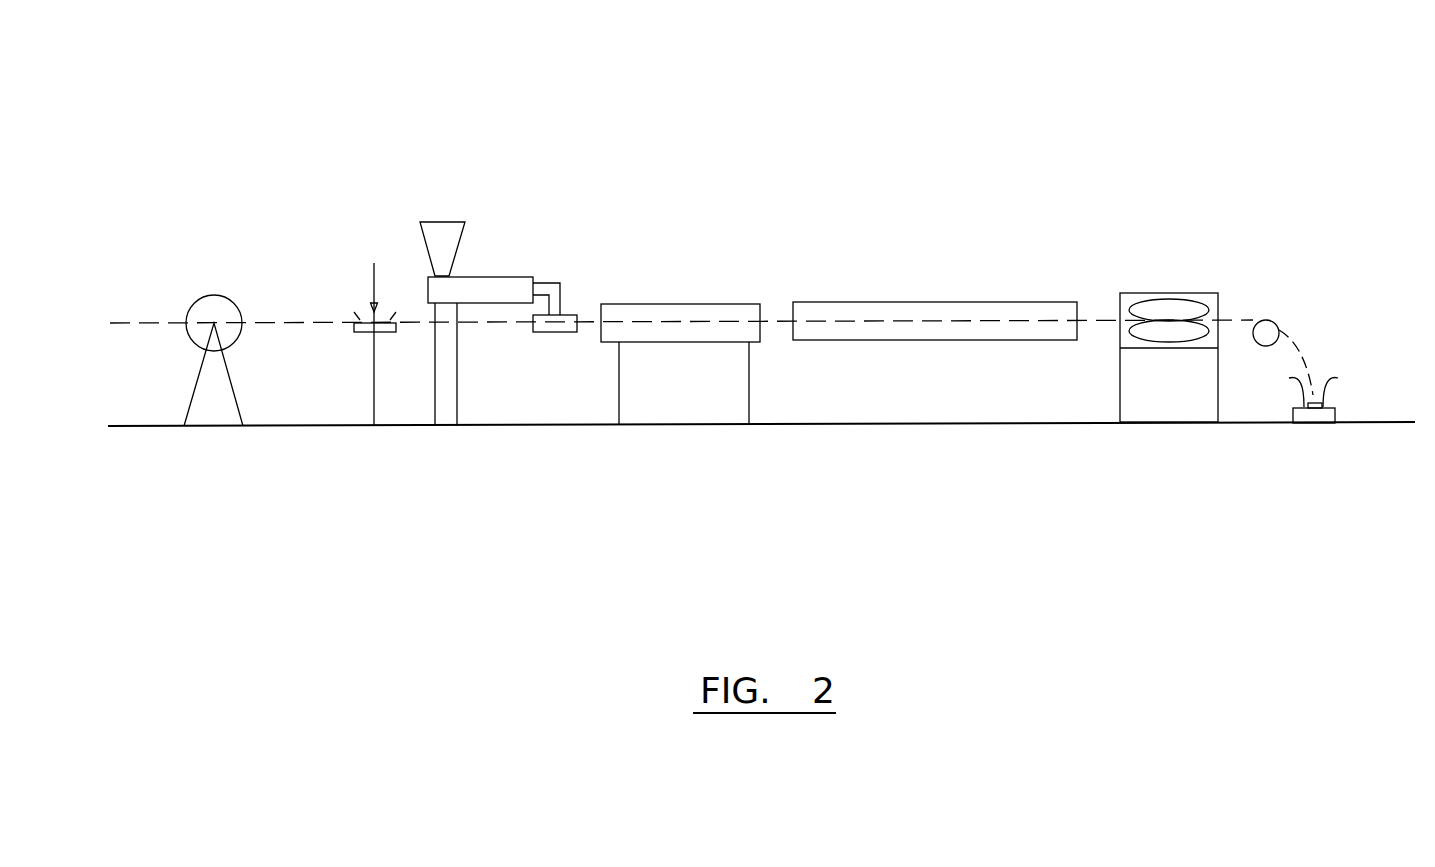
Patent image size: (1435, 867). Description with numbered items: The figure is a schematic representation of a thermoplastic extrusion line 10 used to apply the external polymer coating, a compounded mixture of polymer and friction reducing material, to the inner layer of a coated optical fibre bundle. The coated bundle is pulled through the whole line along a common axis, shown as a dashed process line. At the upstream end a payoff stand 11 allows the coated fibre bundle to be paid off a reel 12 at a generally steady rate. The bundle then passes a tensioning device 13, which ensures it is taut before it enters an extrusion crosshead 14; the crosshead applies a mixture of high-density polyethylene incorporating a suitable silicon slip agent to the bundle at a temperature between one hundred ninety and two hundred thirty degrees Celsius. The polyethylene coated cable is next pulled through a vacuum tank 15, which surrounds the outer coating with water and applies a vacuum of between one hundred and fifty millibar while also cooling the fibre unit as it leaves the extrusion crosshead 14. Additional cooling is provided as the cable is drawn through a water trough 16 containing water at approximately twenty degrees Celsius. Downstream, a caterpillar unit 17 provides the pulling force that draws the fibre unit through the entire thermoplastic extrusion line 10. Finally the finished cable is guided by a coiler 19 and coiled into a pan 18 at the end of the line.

The thermoplastic extrusion line 10 is at (845, 225).
The payoff stand 11 is at (222, 288).
The reel 12 is at (198, 305).
The tensioning device 13 is at (358, 293).
The extrusion crosshead 14 is at (473, 200).
The vacuum tank 15 is at (685, 304).
The water trough 16 is at (1037, 302).
The caterpillar unit 17 is at (1165, 293).
The pan 18 is at (1328, 396).
The coiler 19 is at (1265, 322).